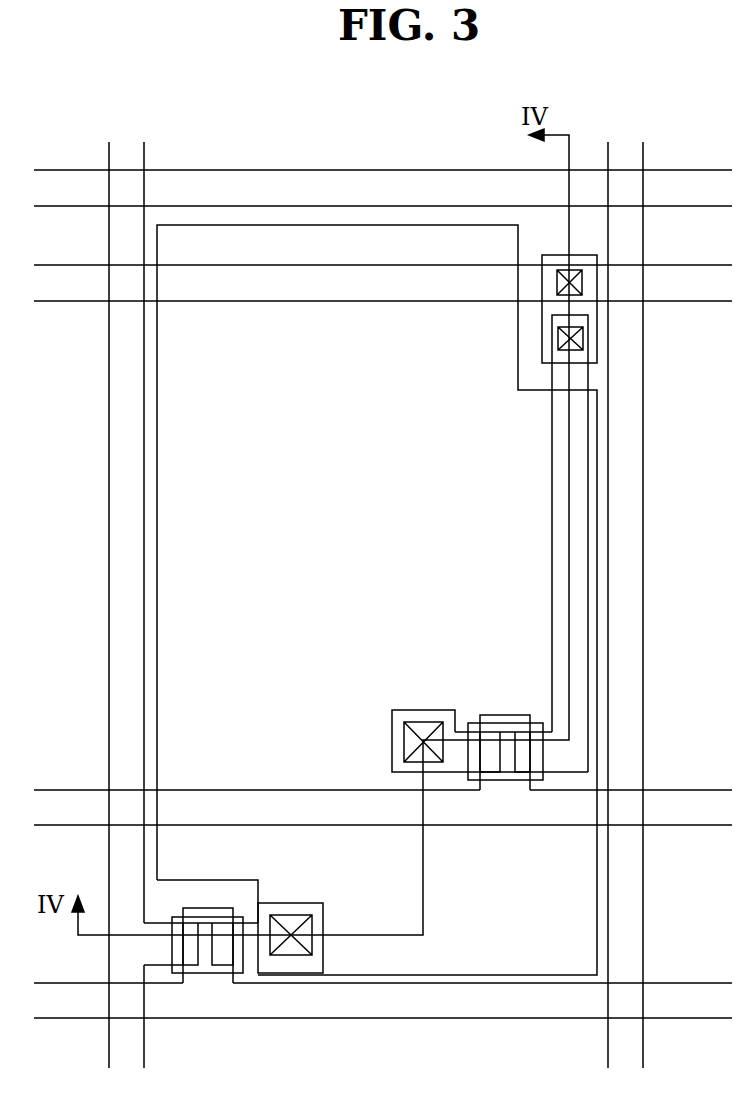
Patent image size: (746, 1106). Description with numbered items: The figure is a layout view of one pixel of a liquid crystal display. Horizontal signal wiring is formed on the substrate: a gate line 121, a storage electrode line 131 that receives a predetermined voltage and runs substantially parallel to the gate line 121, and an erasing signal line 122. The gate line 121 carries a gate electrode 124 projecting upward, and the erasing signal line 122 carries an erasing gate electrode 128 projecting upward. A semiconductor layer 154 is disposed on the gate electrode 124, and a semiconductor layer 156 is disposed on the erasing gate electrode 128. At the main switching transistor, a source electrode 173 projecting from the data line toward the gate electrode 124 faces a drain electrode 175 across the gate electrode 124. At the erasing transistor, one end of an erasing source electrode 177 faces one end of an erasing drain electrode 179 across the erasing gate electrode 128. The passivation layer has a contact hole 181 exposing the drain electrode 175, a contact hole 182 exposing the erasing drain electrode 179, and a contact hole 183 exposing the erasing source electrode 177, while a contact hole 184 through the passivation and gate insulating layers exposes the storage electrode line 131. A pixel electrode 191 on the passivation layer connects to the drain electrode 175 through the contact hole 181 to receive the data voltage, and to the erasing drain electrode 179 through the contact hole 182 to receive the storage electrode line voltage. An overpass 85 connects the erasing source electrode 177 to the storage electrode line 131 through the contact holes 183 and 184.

The gate line 121 is at (227, 168).
The erasing signal line 122 is at (506, 827).
The gate electrode 124 is at (232, 905).
The storage electrode line 131 is at (290, 302).
The semiconductor layer 154 is at (215, 975).
The semiconductor layer 156 is at (508, 715).
The source electrode 173 is at (158, 968).
The drain electrode 175 is at (323, 953).
The erasing source electrode 177 is at (106, 562).
The erasing gate electrode 128 is at (490, 715).
The erasing drain electrode 179 is at (392, 760).
The contact hole 181 is at (325, 912).
The contact hole 182 is at (402, 728).
The contact hole 183 is at (583, 337).
The contact hole 184 is at (556, 282).
The overpass 85 is at (542, 349).
The pixel electrode 191 is at (487, 975).